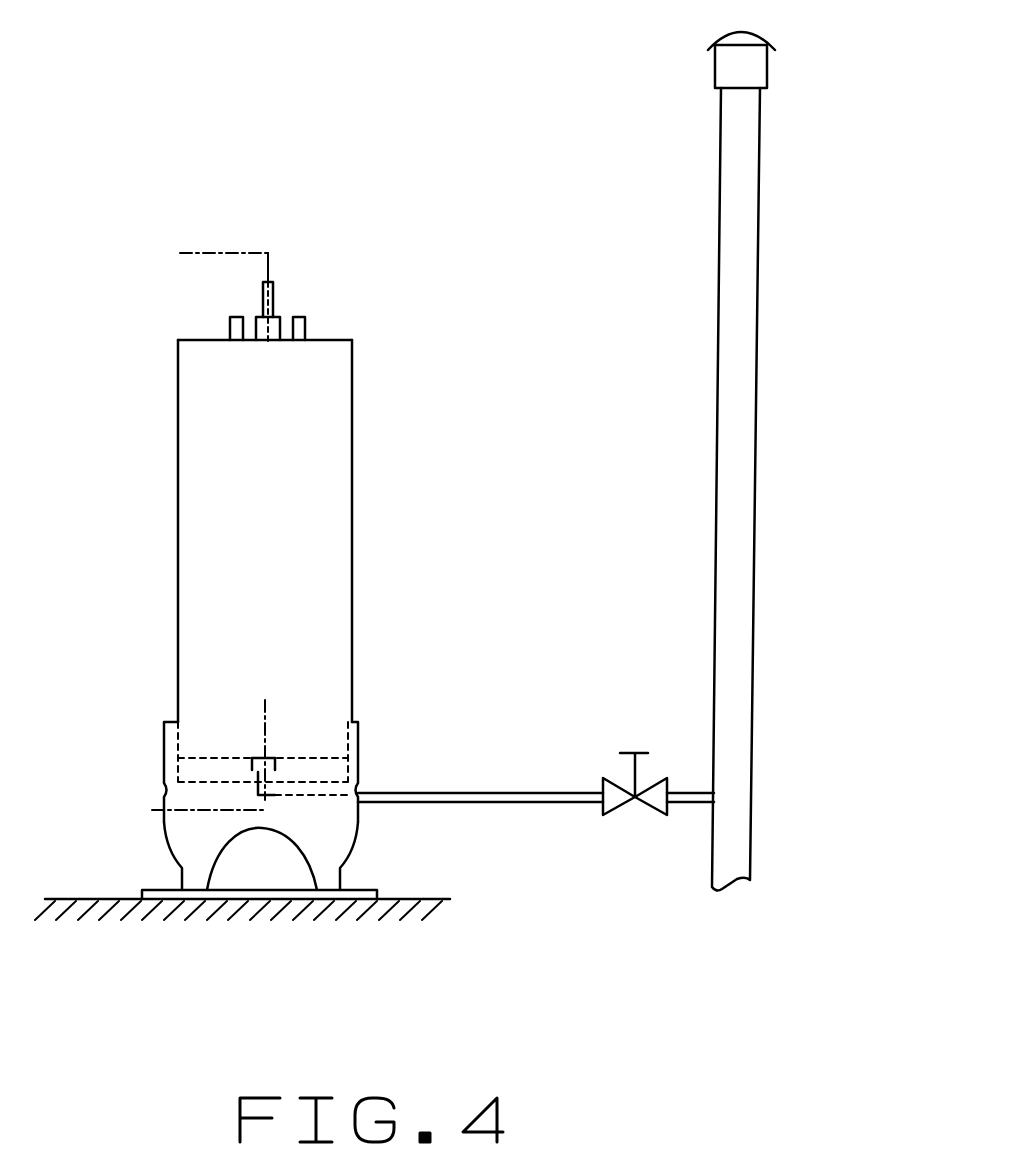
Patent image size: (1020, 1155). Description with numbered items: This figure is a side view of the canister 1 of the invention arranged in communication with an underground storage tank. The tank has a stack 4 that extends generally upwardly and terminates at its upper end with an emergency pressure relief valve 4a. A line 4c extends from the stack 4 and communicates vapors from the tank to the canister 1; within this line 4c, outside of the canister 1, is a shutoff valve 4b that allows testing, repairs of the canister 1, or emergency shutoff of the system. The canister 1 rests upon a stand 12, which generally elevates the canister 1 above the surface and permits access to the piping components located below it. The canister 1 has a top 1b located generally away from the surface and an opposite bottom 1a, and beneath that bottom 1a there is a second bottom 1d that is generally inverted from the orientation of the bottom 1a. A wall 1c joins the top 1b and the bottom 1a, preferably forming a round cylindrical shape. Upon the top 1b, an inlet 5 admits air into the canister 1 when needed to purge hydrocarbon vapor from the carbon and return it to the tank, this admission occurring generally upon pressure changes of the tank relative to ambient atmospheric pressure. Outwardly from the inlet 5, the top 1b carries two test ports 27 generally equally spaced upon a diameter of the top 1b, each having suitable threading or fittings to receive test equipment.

The canister 1 is at (392, 518).
The bottom 1a is at (320, 757).
The top 1b is at (315, 338).
The wall 1c is at (353, 405).
The second bottom 1d is at (337, 772).
The stack 4 is at (740, 547).
The emergency pressure relief valve 4a is at (772, 50).
The shutoff valve 4b is at (643, 750).
The line 4c is at (541, 790).
The inlet 5 is at (273, 285).
The stand 12 is at (328, 858).
The test ports 27 is at (300, 317).